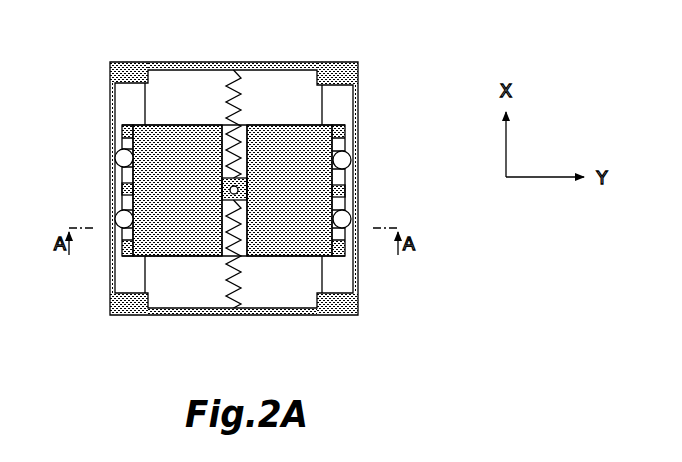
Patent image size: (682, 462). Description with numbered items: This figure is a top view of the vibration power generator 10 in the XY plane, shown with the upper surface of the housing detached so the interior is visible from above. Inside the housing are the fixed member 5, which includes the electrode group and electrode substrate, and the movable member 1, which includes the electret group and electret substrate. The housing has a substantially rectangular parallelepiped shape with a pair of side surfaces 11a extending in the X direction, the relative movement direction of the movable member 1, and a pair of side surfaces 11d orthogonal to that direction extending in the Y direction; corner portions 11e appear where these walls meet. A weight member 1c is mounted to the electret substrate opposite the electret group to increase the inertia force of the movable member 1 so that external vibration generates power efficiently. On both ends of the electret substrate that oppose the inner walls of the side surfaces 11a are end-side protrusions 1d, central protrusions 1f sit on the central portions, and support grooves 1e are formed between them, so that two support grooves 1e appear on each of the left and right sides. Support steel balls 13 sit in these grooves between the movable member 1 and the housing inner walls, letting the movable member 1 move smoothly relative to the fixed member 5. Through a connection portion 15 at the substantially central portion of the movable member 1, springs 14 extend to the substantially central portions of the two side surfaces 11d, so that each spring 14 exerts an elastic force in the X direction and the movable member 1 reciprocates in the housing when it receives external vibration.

The movable member 1 is at (292, 133).
The weight member 1c is at (290, 245).
The end-side protrusion 1d is at (120, 123).
The support groove 1e is at (127, 135).
The central protrusion 1f is at (124, 186).
The fixed member 5 is at (177, 78).
The vibration power generator 10 is at (440, 64).
The side surface 11a is at (113, 92).
The side surface 11d is at (303, 62).
The housing corner portion 11e is at (130, 72).
The support steel ball 13 is at (120, 157).
The spring 14 is at (224, 77).
The connection portion 15 is at (230, 192).